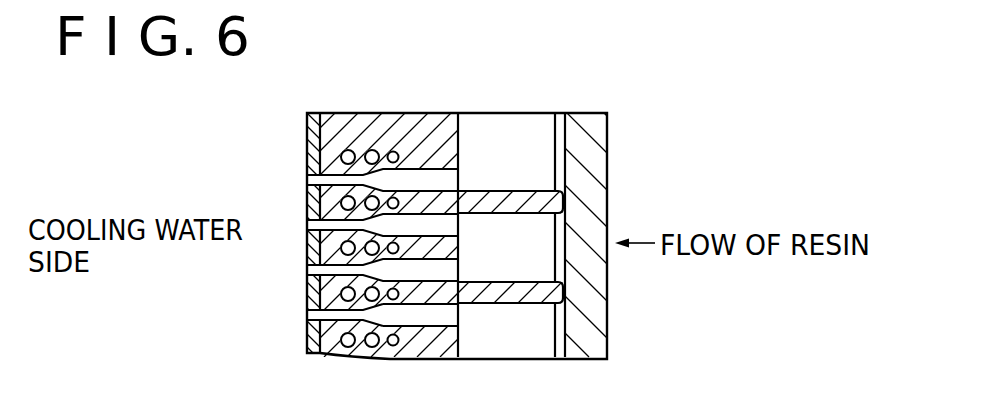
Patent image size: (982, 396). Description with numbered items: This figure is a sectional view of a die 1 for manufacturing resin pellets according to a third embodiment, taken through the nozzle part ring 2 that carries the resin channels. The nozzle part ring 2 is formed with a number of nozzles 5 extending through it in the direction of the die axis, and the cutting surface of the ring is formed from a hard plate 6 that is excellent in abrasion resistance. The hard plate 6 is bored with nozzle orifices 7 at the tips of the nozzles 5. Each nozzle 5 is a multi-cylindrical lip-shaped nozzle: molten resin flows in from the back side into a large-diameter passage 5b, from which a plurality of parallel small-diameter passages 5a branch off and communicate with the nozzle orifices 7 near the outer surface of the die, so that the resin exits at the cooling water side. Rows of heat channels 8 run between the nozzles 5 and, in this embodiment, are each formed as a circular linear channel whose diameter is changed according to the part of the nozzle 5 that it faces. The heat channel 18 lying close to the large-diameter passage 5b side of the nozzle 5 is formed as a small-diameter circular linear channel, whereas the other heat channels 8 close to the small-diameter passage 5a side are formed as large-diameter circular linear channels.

The die 1 is at (625, 136).
The nozzle part ring 2 is at (527, 130).
The nozzle 5 is at (499, 334).
The small-diameter passage 5a is at (447, 319).
The large-diameter passage 5b is at (363, 318).
The hard plate 6 is at (305, 133).
The nozzle orifice 7 is at (308, 177).
The heat channel 8 is at (351, 149).
The heat channel 18 is at (397, 150).